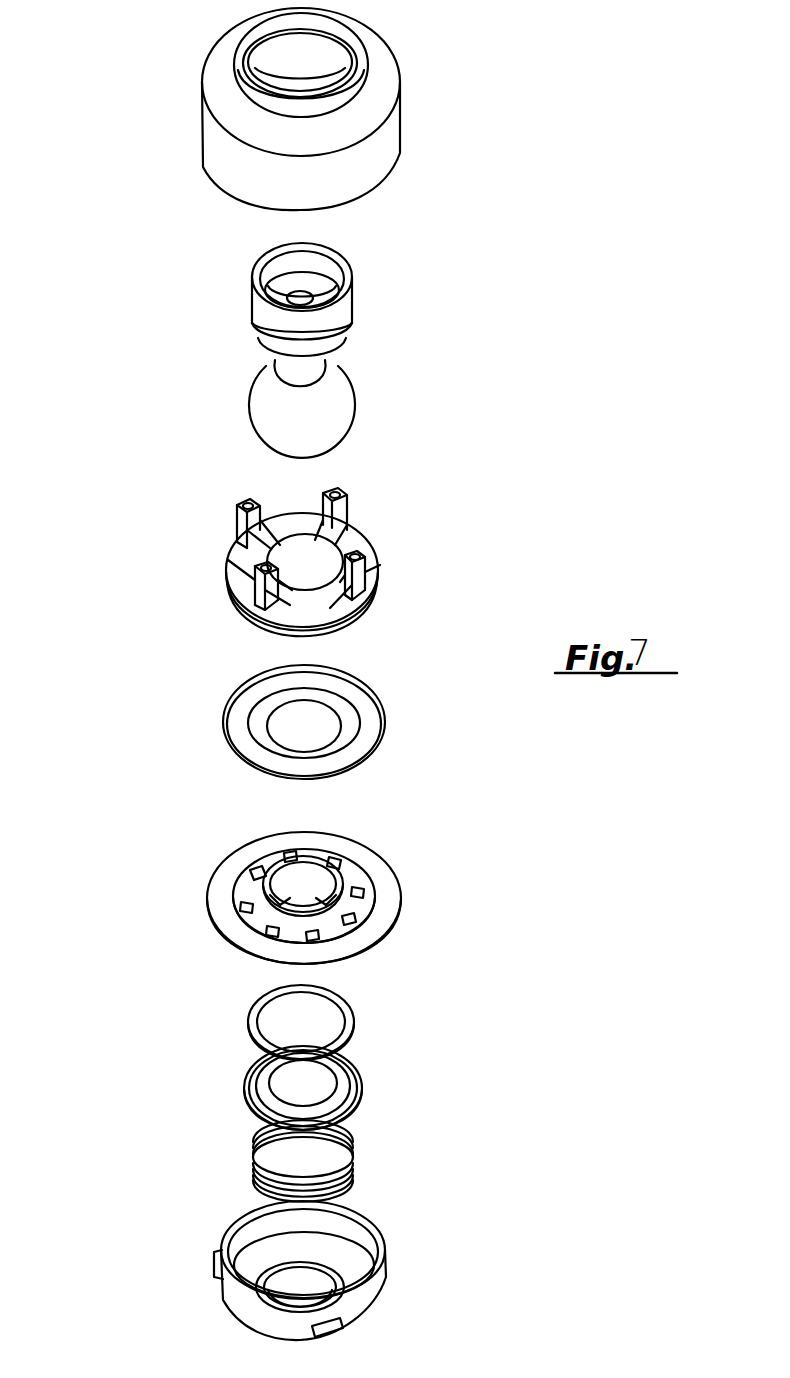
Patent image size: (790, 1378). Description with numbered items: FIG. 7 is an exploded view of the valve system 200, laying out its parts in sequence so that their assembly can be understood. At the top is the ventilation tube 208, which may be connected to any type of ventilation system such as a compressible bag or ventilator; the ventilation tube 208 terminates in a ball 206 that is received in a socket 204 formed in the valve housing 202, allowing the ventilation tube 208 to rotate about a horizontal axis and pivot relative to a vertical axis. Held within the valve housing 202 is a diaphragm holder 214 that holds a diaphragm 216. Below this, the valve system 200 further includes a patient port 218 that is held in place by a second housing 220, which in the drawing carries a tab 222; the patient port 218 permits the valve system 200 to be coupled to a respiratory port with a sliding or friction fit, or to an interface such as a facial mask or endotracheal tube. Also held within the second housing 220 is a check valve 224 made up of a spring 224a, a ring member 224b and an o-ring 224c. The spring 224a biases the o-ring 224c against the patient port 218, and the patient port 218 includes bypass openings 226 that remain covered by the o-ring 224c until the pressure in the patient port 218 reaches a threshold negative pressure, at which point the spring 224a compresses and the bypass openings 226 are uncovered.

The valve system 200 is at (500, 296).
The valve housing 202 is at (202, 68).
The socket 204 is at (313, 62).
The ball 206 is at (248, 390).
The ventilation tube 208 is at (312, 276).
The diaphragm holder 214 is at (347, 503).
The diaphragm 216 is at (228, 700).
The patient port 218 is at (407, 894).
The bypass openings 226 is at (255, 873).
The check valve 224 is at (227, 1010).
The spring 224a is at (358, 1152).
The ring member 224b is at (365, 1068).
The o-ring 224c is at (352, 1000).
The second housing 220 is at (392, 1272).
The tab 222 is at (213, 1262).